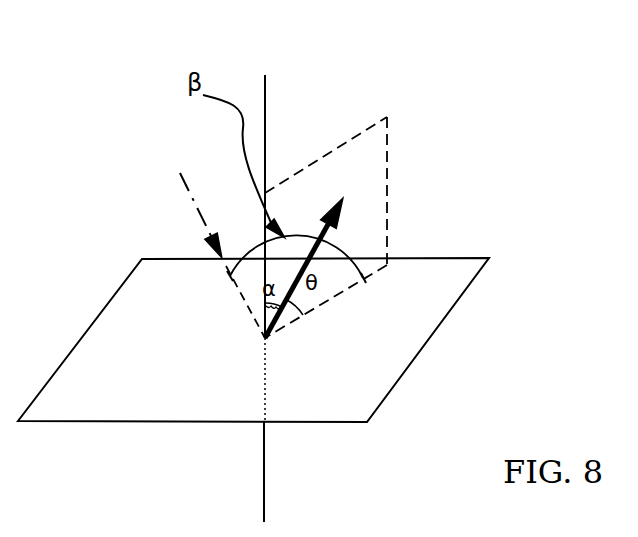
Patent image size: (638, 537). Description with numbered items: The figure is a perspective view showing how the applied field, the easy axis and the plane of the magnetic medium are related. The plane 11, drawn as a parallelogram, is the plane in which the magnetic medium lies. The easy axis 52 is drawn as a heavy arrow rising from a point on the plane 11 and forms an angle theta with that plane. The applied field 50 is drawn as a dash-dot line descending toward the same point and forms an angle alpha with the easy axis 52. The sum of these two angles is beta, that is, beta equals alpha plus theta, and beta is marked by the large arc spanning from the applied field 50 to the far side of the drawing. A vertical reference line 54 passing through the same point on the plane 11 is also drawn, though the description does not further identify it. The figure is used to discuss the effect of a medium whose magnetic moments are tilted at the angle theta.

The plane of the magnetic medium 11 is at (124, 384).
The applied field 50 is at (201, 243).
The easy axis 52 is at (306, 254).
The surface normal axis 54 is at (265, 97).